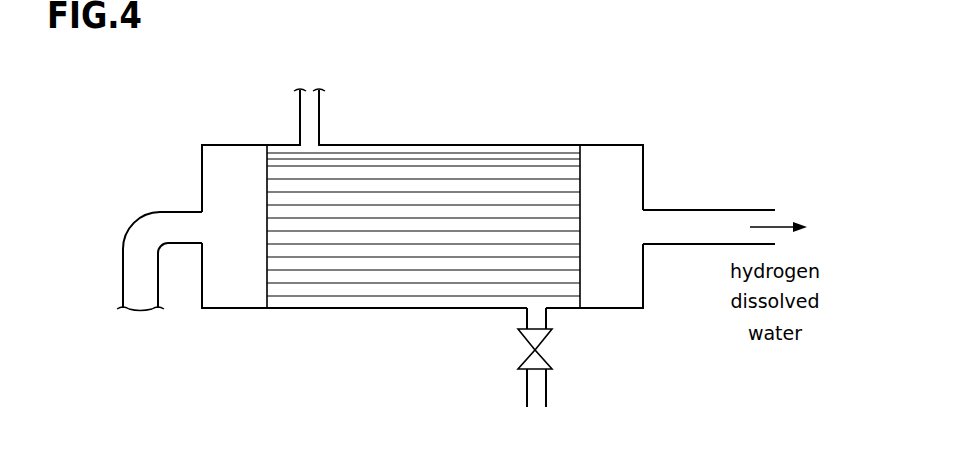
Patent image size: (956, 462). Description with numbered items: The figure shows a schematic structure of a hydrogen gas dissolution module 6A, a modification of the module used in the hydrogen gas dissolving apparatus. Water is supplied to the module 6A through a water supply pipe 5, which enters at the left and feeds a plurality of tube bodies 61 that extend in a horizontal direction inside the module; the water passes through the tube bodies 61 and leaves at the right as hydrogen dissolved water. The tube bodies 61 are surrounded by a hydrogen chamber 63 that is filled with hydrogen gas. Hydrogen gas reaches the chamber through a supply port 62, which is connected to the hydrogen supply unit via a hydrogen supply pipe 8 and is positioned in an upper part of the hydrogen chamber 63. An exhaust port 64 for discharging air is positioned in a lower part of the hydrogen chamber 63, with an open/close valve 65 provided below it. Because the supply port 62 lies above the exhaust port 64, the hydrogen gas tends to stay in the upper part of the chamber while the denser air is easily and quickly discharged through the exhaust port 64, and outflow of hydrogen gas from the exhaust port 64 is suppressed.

The hydrogen gas dissolution module 6A is at (712, 63).
The tube body 61 is at (485, 173).
The hydrogen chamber 63 is at (420, 163).
The hydrogen supply pipe 8 is at (310, 118).
The supply port 62 is at (308, 147).
The water supply pipe 5 is at (140, 282).
The exhaust port 64 is at (530, 311).
The open/close valve 65 is at (548, 349).